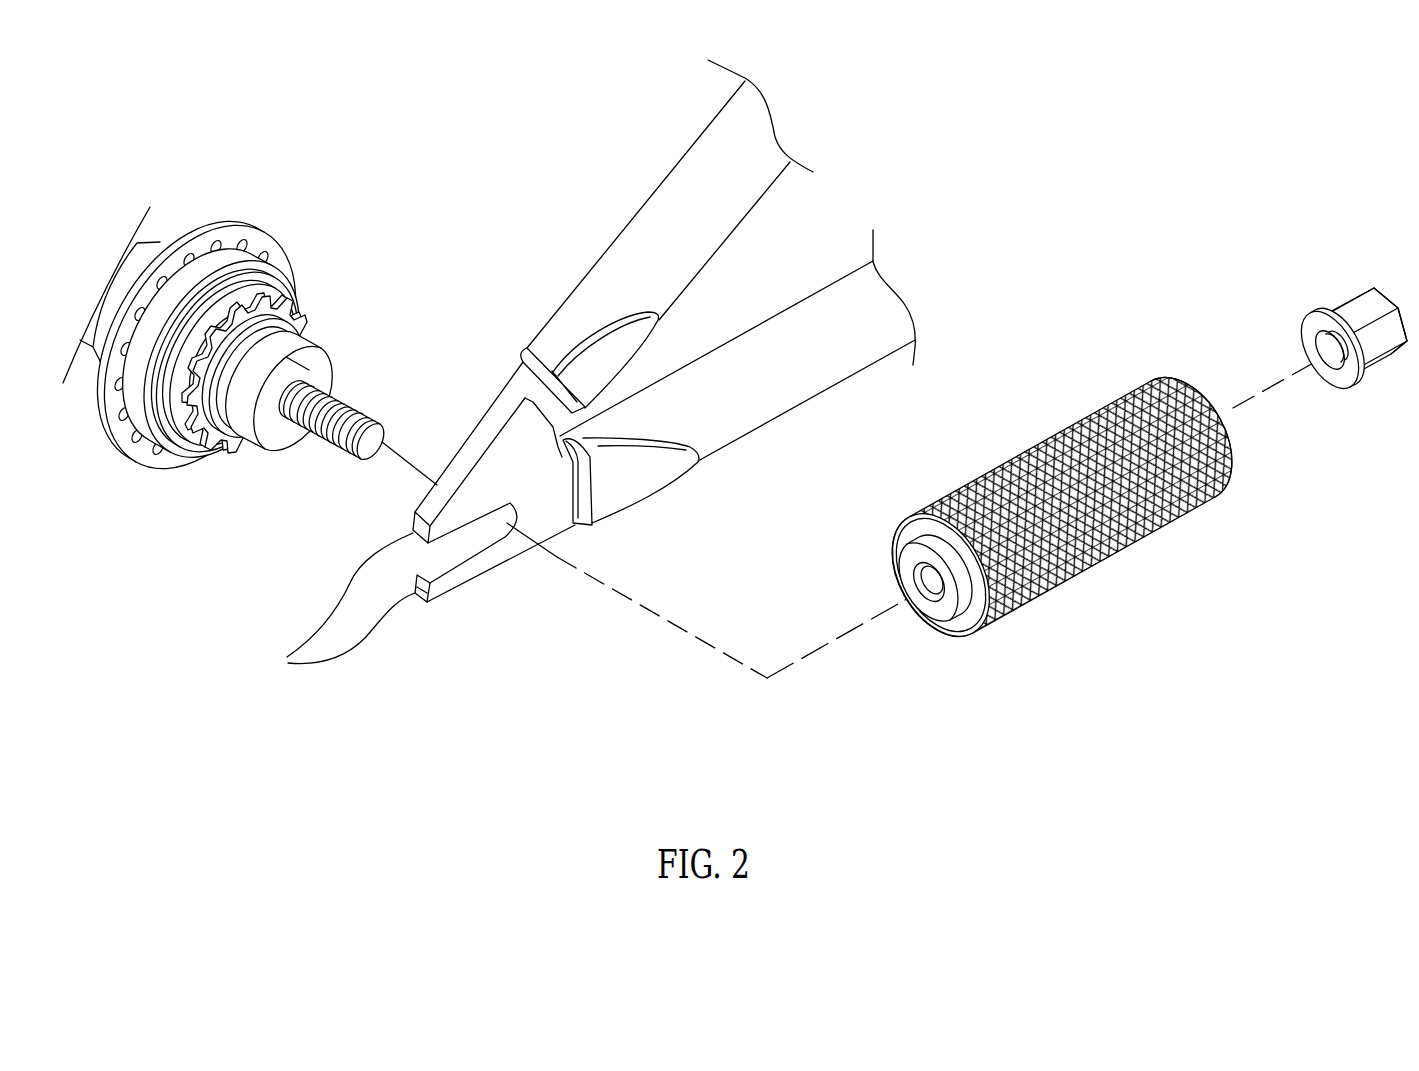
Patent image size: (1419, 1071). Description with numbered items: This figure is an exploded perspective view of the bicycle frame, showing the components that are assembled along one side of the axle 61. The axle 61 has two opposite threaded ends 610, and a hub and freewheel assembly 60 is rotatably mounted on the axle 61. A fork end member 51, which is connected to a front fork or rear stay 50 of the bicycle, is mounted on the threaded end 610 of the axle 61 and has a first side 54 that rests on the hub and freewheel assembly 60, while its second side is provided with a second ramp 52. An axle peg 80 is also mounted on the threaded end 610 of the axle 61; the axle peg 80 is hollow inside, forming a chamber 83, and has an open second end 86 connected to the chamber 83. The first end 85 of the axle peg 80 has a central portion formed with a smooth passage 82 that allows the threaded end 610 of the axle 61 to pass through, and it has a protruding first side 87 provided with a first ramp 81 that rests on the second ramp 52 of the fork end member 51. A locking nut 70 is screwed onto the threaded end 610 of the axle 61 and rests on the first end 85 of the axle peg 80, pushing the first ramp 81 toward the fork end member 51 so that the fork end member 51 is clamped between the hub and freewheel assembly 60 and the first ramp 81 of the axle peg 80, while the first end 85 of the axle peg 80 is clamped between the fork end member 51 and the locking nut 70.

The front fork or rear stay 50 is at (639, 202).
The fork end member 51 is at (287, 659).
The second ramp 52 is at (540, 487).
The first side 54 is at (506, 471).
The hub and freewheel assembly 60 is at (250, 432).
The axle 61 is at (321, 459).
The threaded end 610 is at (347, 393).
The locking nut 70 is at (1333, 303).
The axle peg 80 is at (1091, 511).
The first ramp 81 is at (952, 637).
The smooth passage 82 is at (917, 613).
The chamber 83 is at (1197, 390).
The first end 85 is at (900, 540).
The open second end 86 is at (1230, 468).
The protruding first side 87 is at (992, 627).